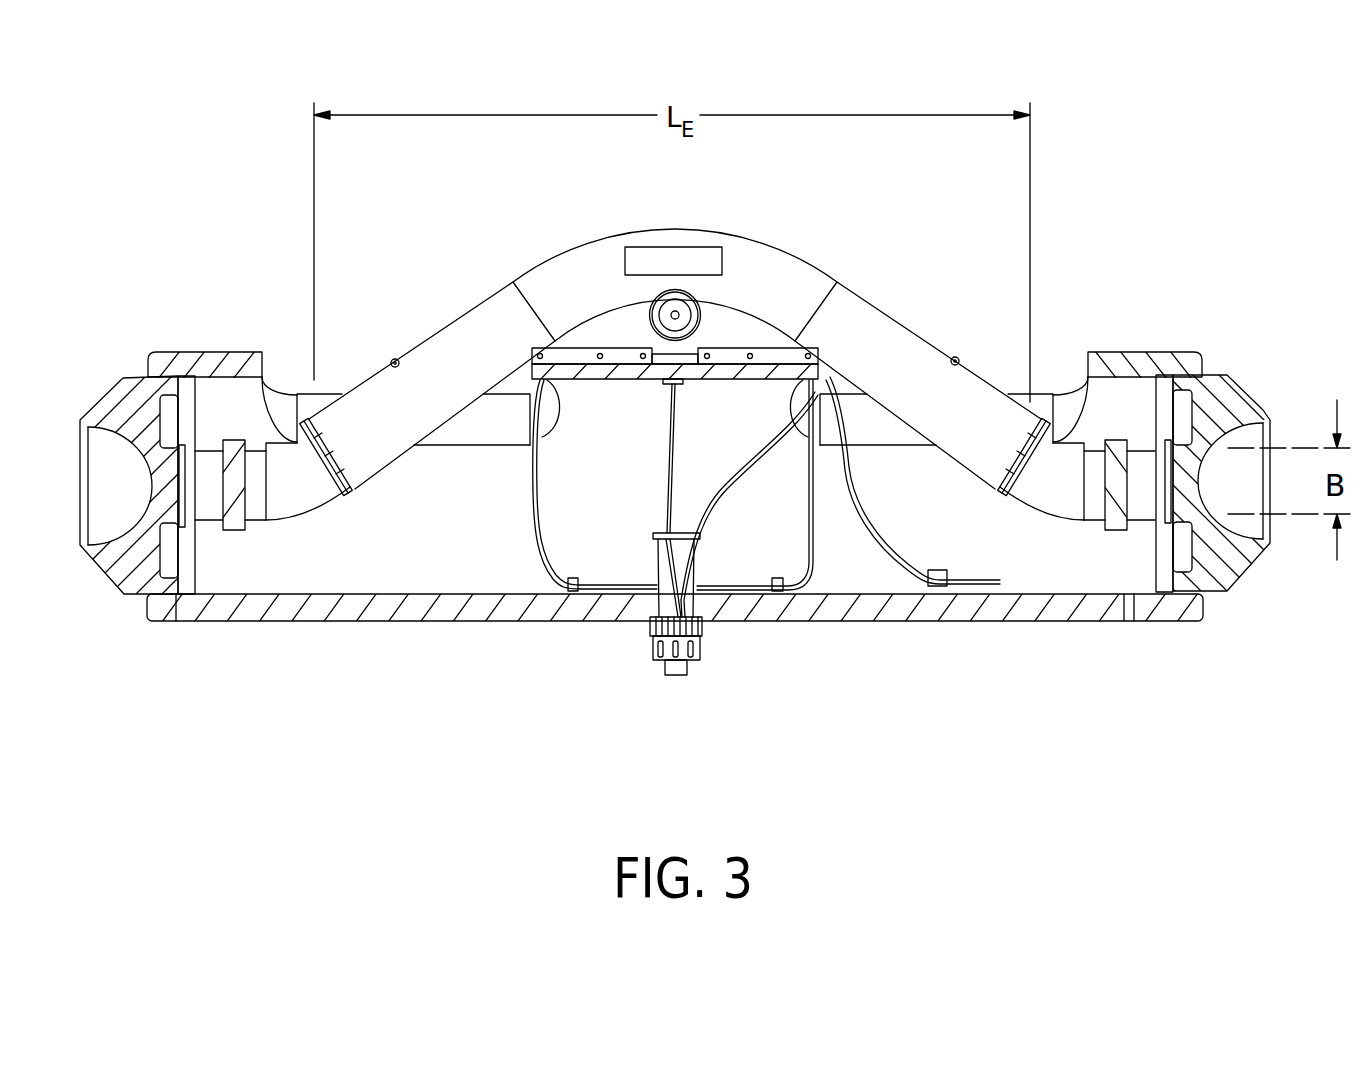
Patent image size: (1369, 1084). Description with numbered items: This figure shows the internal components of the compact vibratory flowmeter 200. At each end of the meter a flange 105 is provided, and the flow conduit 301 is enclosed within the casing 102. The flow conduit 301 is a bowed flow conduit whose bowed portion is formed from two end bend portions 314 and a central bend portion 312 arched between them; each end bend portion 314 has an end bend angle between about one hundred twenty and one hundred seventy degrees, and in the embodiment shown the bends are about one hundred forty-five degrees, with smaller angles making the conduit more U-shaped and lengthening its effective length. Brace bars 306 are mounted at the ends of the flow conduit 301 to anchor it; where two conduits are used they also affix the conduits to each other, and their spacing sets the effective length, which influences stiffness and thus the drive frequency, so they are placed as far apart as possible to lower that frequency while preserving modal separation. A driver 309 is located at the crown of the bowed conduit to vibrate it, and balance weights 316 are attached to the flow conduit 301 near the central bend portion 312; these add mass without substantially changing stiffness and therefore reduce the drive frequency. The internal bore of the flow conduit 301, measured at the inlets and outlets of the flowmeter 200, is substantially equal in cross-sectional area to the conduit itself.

The casing 102 is at (1140, 350).
The flanges 105 is at (113, 393).
The compact vibratory flowmeter 200 is at (397, 790).
The flow conduit 301 is at (900, 327).
The brace bars 306 is at (358, 483).
The driver 309 is at (649, 316).
The central bend portion 312 is at (583, 217).
The end bend portions 314 is at (262, 531).
The balance weights 316 is at (623, 262).